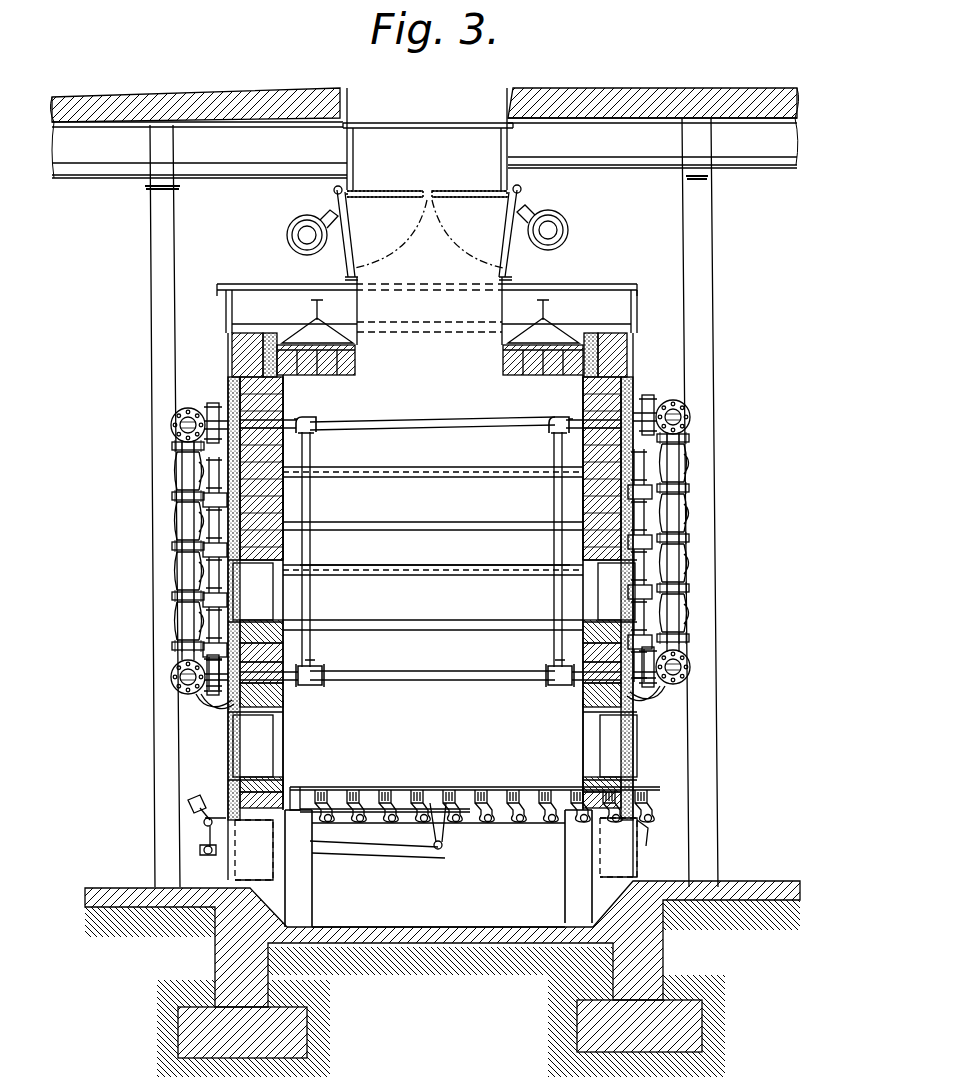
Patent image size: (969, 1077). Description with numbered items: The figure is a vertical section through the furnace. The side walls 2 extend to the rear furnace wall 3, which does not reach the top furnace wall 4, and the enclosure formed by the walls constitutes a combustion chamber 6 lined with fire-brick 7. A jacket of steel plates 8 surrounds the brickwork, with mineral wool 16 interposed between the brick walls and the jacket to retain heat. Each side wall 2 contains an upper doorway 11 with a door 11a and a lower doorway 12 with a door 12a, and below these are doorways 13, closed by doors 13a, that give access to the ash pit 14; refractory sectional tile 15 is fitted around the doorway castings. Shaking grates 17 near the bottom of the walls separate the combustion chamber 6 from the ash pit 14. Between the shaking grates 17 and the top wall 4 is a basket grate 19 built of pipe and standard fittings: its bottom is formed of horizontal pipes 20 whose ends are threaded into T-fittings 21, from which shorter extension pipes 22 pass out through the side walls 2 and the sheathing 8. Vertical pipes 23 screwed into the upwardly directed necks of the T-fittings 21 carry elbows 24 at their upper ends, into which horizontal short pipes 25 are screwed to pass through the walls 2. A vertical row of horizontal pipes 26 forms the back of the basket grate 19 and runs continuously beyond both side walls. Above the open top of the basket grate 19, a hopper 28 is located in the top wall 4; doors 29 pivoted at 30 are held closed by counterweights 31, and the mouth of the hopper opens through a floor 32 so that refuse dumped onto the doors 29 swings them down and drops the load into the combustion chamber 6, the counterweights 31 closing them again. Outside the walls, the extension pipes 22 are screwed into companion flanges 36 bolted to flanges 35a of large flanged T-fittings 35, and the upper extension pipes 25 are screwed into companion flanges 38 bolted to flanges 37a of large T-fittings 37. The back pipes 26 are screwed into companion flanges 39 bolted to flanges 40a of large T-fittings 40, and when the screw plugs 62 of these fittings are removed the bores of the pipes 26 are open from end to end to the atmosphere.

The side walls 2 is at (268, 456).
The rear furnace wall 3 is at (495, 726).
The top furnace wall 4 is at (340, 378).
The combustion chamber 6 is at (433, 499).
The fire-brick 7 is at (320, 378).
The jacket of steel plates 8 is at (226, 330).
The upper doorways 11 is at (266, 612).
The doors 11a is at (236, 598).
The lower doorways 12 is at (258, 720).
The doors 12a is at (228, 760).
The doorways 13 is at (256, 868).
The doors 13a is at (228, 860).
The ash pit 14 is at (438, 875).
The refractory sectional tile 15 is at (283, 556).
The mineral wool 16 is at (233, 368).
The shaking grates 17 is at (430, 787).
The basket grate 19 is at (430, 568).
The horizontally disposed pipes 20 is at (440, 680).
The T-fittings 21 is at (322, 684).
The extension pipes 22 is at (290, 680).
The vertical pipes 23 is at (311, 548).
The elbows 24 is at (314, 432).
The short pipes 25 is at (285, 420).
The horizontal pipes 26 is at (455, 420).
The hopper 28 is at (377, 150).
The doors 29 is at (388, 191).
The pivot 30 is at (334, 190).
The counterweights 31 is at (300, 232).
The floor 32 is at (112, 97).
The large flanged T-fittings 35 is at (171, 678).
The flange 35a is at (204, 695).
The companion flange 36 is at (205, 705).
The large flanged T-fittings 37 is at (171, 424).
The flange 37a is at (211, 404).
The companion flange 38 is at (222, 418).
The companion flanges 39 is at (178, 450).
The large T-fittings 40 is at (172, 480).
The flanges 40a is at (204, 498).
The screw plugs 62 is at (176, 474).